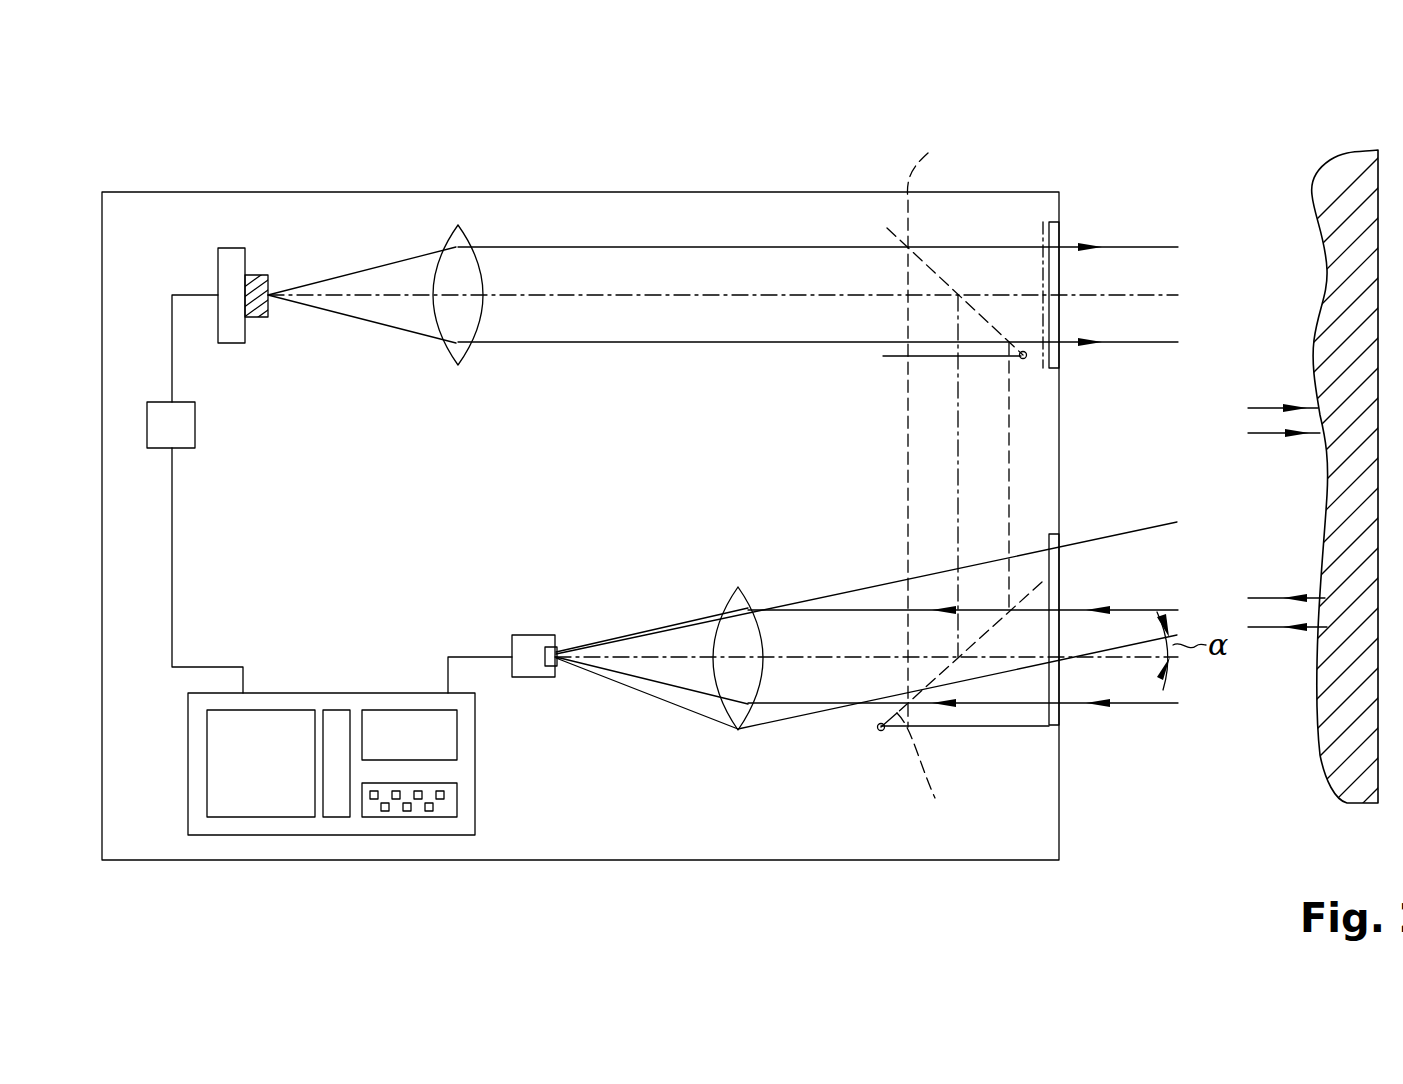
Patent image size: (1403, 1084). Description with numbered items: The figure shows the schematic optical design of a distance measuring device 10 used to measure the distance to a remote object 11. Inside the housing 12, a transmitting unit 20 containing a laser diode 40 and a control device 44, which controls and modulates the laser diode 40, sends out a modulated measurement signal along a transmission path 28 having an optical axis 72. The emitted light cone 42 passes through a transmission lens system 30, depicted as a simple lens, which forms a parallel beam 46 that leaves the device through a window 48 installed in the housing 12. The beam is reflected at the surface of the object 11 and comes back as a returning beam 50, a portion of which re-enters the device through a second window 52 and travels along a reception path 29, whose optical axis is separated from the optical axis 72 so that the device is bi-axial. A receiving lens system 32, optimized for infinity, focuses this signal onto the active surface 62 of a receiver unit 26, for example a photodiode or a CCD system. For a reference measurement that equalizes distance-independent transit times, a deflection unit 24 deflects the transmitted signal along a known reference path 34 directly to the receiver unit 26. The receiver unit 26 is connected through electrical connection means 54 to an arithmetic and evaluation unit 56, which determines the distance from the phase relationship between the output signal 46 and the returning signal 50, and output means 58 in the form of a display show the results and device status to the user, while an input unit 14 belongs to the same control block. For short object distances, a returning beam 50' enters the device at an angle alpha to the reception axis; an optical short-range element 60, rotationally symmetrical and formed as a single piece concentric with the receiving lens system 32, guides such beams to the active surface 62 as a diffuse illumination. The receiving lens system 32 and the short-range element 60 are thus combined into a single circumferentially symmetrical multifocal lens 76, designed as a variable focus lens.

The distance measuring device 10 is at (180, 190).
The remote object 11 is at (1313, 358).
The housing 12 is at (755, 192).
The input unit / keypad 14 is at (443, 808).
The transmitting unit 20 is at (274, 239).
The deflection unit 24 is at (942, 805).
The receiver unit 26 is at (532, 645).
The transmission path 28 is at (600, 318).
The reception path 29 is at (848, 655).
The transmission lens system 30 is at (462, 233).
The receiving lens system 32 is at (728, 678).
The reference path 34 is at (950, 497).
The laser diode 40 is at (268, 273).
The emitted light cone 42 is at (375, 268).
The control device 44 is at (180, 427).
The parallel beam 46 is at (817, 318).
The window 48 is at (1055, 228).
The returning beam 50 is at (1251, 659).
The returning beam at short range 50' is at (866, 567).
The window 52 is at (1060, 713).
The electrical connection means 54 is at (460, 648).
The arithmetic and evaluation unit 56 is at (310, 702).
The output means 58 is at (258, 787).
The optical short-range element 60 is at (740, 712).
The active surface 62 is at (562, 640).
The optical axis 72 is at (600, 293).
The multifocal lens 76 is at (737, 737).